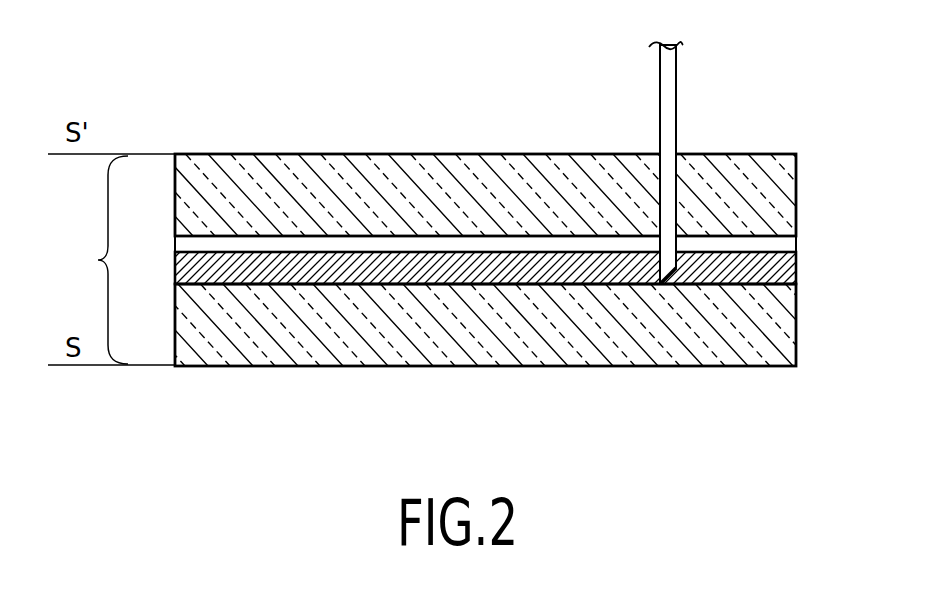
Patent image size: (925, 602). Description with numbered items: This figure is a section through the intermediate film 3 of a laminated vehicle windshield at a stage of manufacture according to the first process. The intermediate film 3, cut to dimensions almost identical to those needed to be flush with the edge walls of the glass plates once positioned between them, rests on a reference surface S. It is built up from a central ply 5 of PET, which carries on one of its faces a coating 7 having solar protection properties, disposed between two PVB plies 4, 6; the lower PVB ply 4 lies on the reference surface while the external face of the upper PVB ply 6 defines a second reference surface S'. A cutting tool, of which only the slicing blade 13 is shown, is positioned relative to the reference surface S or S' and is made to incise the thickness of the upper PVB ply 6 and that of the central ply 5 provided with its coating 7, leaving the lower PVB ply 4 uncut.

The intermediate film 3 is at (98, 260).
The PVB ply 4 is at (768, 335).
The central ply 5 is at (785, 272).
The PVB ply 6 is at (768, 187).
The coating 7 is at (785, 243).
The slicing blade 13 is at (670, 73).